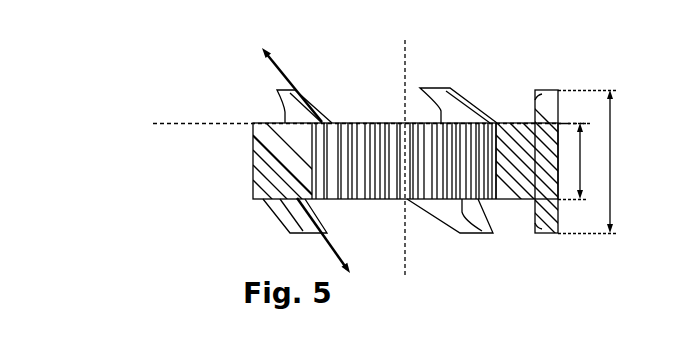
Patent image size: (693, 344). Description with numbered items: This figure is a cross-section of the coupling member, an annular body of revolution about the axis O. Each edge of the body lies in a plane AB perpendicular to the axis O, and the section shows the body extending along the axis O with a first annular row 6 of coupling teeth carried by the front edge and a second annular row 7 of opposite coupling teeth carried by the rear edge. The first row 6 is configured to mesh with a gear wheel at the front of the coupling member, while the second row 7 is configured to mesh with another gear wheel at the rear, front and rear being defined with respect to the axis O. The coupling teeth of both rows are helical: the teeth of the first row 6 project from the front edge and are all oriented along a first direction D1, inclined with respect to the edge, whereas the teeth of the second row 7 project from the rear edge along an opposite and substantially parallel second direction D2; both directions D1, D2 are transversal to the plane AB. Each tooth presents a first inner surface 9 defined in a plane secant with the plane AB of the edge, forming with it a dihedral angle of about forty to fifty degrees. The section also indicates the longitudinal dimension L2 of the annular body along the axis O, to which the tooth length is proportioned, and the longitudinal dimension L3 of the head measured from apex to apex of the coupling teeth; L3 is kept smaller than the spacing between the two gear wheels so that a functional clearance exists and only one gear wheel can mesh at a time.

The plane of the edge AB is at (174, 121).
The axis of revolution O is at (405, 60).
The first annular row of coupling teeth 6 is at (272, 236).
The second annular row of coupling teeth 7 is at (490, 88).
The first surface 9 is at (280, 101).
The first direction D1 is at (345, 254).
The second direction D2 is at (290, 70).
The longitudinal dimension of the annular body L2 is at (578, 161).
The longitudinal dimension of the head L3 is at (593, 162).